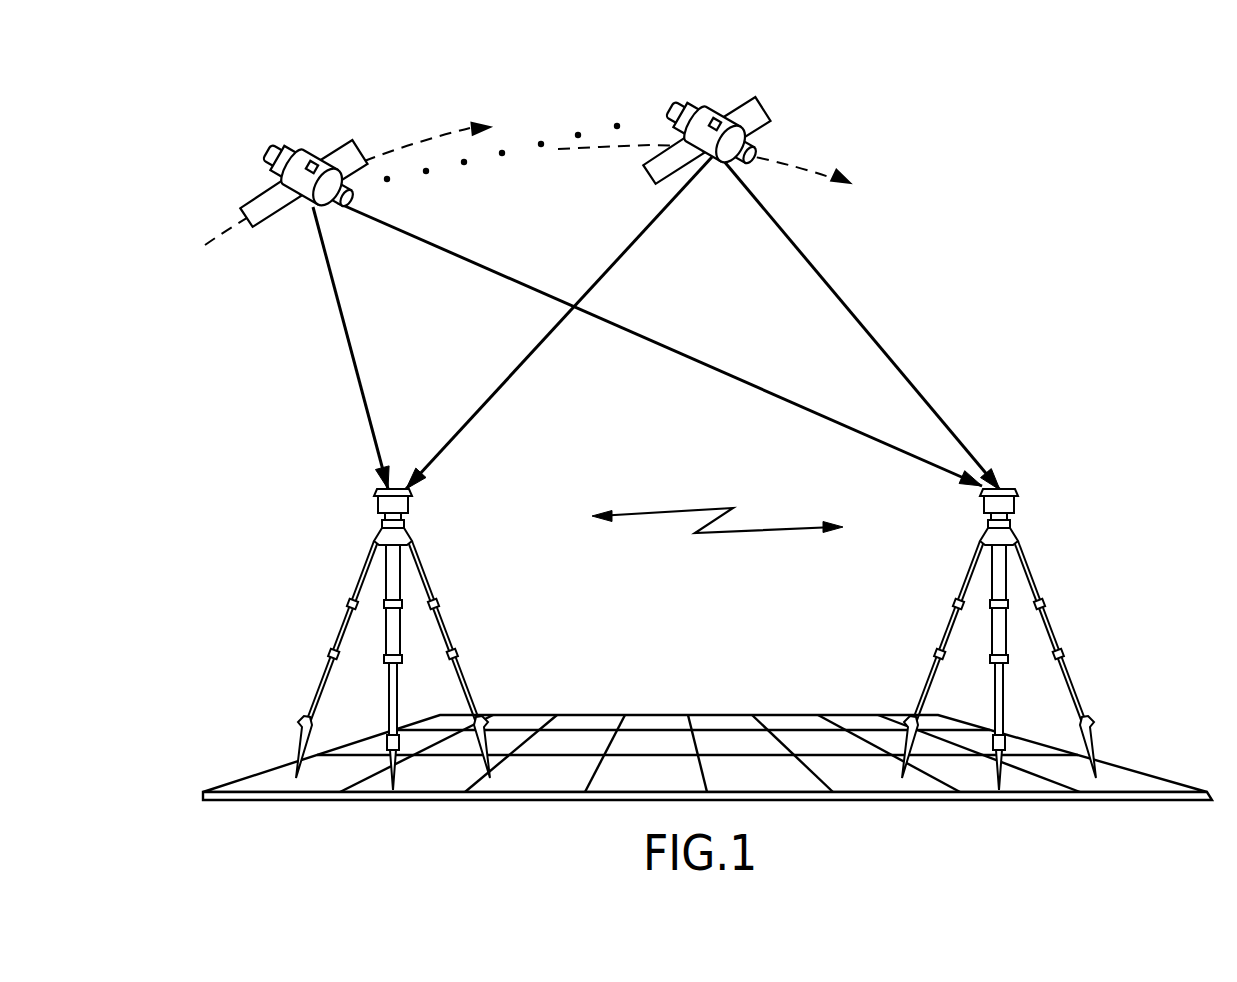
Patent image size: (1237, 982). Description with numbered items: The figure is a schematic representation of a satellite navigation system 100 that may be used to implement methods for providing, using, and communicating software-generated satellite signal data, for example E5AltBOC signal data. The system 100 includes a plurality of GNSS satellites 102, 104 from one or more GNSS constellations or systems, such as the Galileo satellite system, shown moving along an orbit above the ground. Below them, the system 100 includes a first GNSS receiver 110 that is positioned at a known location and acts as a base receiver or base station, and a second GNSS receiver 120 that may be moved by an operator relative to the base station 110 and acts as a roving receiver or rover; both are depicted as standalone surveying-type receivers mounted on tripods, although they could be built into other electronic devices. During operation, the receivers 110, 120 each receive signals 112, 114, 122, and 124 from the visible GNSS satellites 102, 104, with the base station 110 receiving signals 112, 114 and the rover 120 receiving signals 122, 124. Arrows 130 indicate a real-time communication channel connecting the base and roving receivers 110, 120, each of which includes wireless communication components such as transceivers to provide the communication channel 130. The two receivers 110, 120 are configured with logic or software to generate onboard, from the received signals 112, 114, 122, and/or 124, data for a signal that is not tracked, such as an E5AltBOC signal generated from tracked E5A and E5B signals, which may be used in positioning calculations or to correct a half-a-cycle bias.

The satellite navigation system 100 is at (701, 424).
The GNSS satellite 102 is at (281, 234).
The GNSS satellite 104 is at (717, 202).
The first GNSS receiver 110 is at (350, 509).
The signal 112 is at (338, 296).
The signal 114 is at (465, 426).
The second GNSS receiver 120 is at (1043, 492).
The signal 122 is at (622, 326).
The signal 124 is at (835, 285).
The real-time communication channel 130 is at (718, 538).